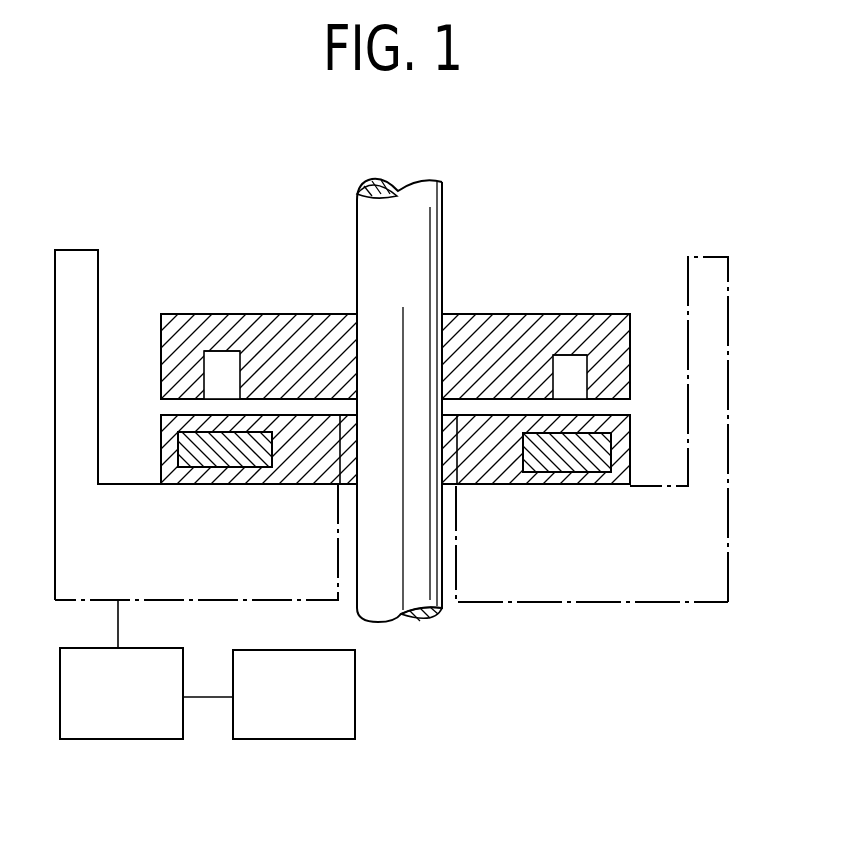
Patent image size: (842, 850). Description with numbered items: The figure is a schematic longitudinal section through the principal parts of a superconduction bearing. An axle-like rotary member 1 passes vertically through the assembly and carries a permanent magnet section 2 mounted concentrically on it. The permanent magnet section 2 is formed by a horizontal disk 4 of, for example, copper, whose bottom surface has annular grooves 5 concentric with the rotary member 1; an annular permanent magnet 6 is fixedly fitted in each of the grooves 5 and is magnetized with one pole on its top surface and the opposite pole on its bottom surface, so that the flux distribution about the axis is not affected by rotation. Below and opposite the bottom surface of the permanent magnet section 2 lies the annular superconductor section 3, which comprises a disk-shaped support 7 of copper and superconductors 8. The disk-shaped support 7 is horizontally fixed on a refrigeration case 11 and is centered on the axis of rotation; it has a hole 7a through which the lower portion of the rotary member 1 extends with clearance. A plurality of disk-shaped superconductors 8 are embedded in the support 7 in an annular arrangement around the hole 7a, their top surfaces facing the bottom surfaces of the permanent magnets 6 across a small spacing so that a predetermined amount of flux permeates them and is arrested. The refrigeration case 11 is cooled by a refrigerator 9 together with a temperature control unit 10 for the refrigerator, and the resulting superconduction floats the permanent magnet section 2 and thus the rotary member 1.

The rotary member 1 is at (442, 204).
The permanent magnet section 2 is at (546, 322).
The superconductor section 3 is at (632, 424).
The disk 4 is at (176, 330).
The annular grooves 5 is at (210, 352).
The permanent magnet 6 is at (235, 356).
The disk-shaped support 7 is at (161, 418).
The hole 7a is at (341, 450).
The superconductor 8 is at (185, 452).
The refrigerator 9 is at (303, 738).
The temperature control unit 10 is at (142, 727).
The refrigeration case 11 is at (580, 603).